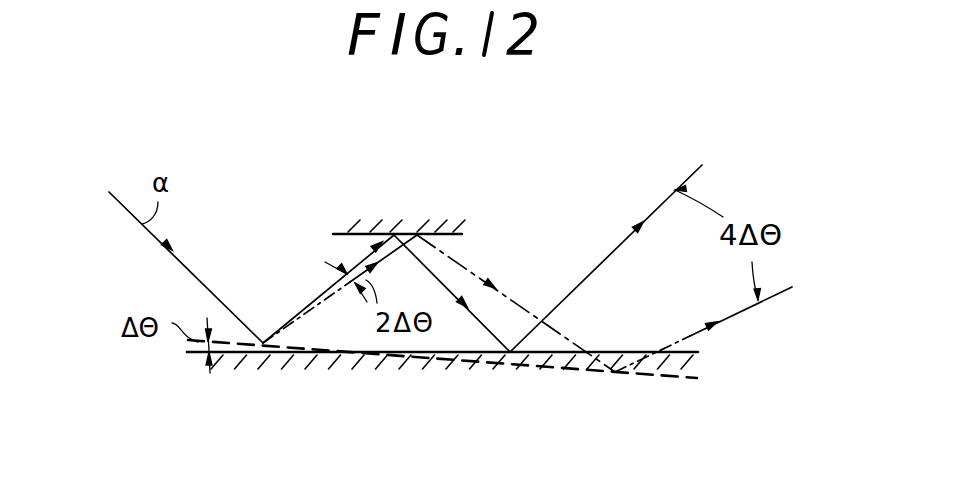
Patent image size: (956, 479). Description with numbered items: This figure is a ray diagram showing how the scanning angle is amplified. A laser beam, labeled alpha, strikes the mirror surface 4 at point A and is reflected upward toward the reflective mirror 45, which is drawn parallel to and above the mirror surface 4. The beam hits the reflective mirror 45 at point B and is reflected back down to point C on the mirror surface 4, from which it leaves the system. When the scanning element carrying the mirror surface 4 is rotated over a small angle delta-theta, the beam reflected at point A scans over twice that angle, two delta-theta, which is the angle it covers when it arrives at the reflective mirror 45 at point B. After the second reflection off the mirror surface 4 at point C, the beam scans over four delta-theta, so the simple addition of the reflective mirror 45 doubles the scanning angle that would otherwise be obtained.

The mirror surface 4 is at (238, 341).
The reflective mirror 45 is at (447, 231).
The point A is at (193, 300).
The point B is at (452, 270).
The point C is at (601, 287).